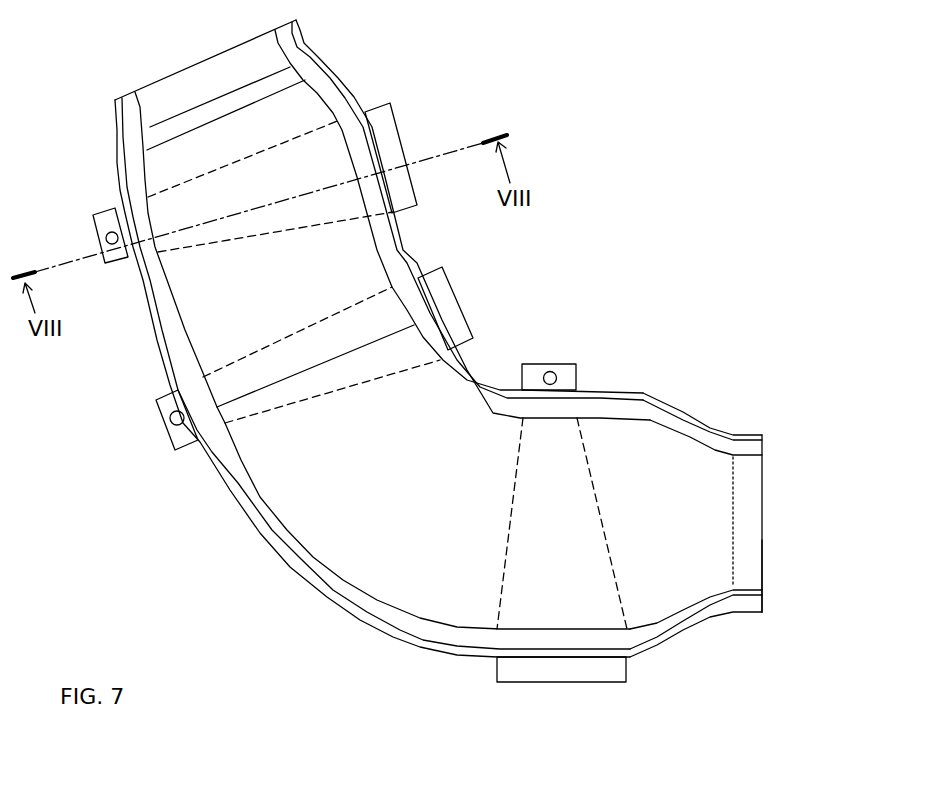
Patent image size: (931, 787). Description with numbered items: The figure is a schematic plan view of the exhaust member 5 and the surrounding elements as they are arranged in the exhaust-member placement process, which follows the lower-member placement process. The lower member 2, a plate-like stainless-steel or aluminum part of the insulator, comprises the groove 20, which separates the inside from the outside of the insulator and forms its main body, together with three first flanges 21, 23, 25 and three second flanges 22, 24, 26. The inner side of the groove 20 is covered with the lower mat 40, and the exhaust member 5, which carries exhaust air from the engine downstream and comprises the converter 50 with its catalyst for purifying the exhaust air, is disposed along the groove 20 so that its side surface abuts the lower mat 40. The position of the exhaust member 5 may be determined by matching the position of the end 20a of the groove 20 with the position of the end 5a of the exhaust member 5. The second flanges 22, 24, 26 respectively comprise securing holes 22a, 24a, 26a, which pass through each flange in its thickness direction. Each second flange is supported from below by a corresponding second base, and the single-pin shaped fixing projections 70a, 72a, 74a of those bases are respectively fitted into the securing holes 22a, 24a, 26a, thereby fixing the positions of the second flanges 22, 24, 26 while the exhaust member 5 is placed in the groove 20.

The lower member 2 is at (362, 62).
The exhaust member 5 is at (668, 497).
The end of exhaust member 5a is at (762, 540).
The groove 20 is at (125, 95).
The end of groove 20a is at (764, 438).
The first flange 21 is at (390, 138).
The second flange 22 is at (103, 222).
The securing hole 22a is at (106, 238).
The first flange 23 is at (448, 307).
The second flange 24 is at (182, 433).
The securing hole 24a is at (170, 418).
The first flange 25 is at (613, 668).
The second flange 26 is at (565, 375).
The securing hole 26a is at (553, 374).
The lower mat 40 is at (658, 418).
The converter 50 is at (335, 283).
The fixing projection 70a is at (113, 232).
The fixing projection 72a is at (175, 413).
The fixing projection 74a is at (543, 372).